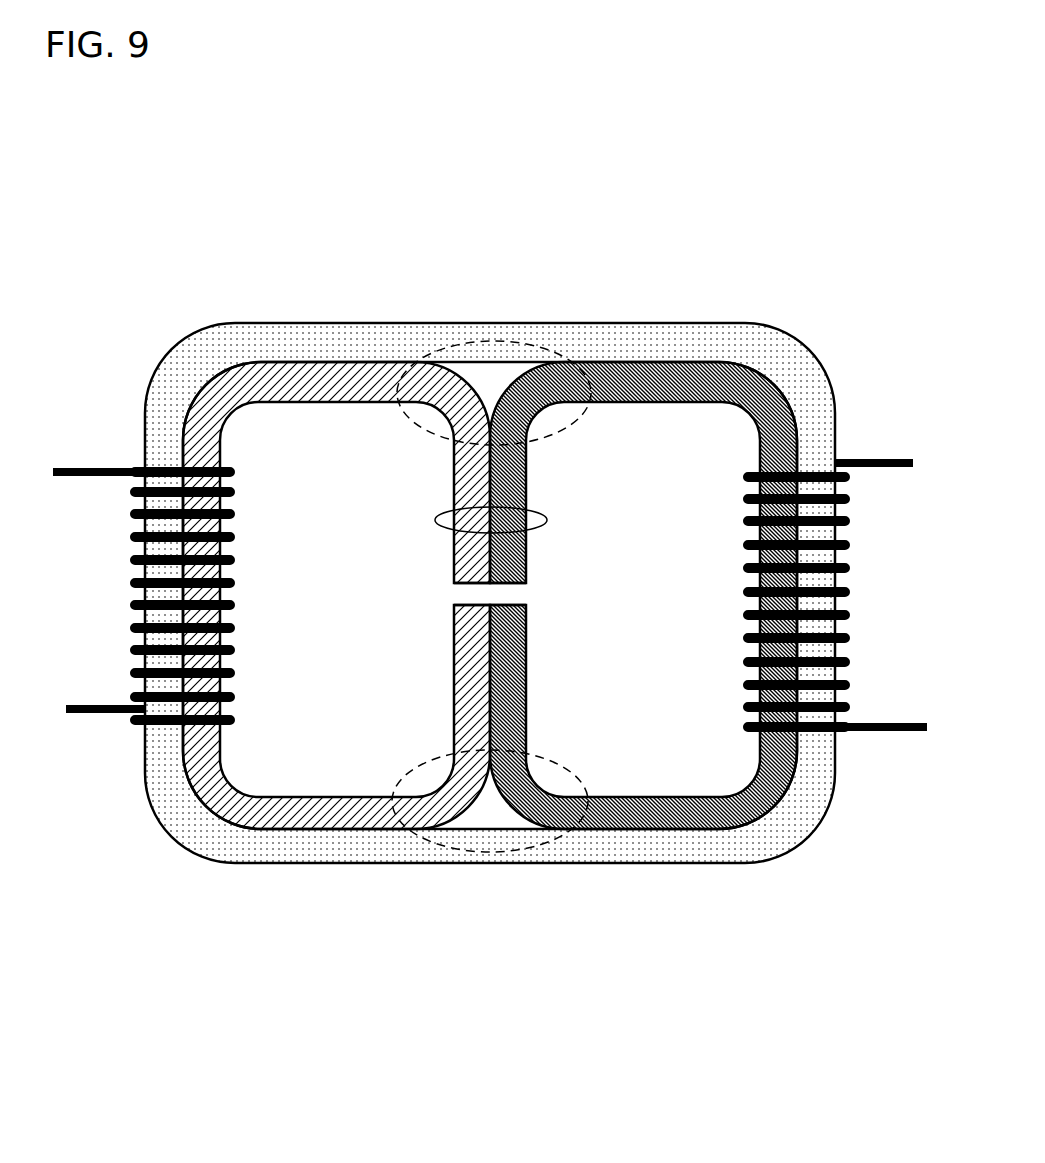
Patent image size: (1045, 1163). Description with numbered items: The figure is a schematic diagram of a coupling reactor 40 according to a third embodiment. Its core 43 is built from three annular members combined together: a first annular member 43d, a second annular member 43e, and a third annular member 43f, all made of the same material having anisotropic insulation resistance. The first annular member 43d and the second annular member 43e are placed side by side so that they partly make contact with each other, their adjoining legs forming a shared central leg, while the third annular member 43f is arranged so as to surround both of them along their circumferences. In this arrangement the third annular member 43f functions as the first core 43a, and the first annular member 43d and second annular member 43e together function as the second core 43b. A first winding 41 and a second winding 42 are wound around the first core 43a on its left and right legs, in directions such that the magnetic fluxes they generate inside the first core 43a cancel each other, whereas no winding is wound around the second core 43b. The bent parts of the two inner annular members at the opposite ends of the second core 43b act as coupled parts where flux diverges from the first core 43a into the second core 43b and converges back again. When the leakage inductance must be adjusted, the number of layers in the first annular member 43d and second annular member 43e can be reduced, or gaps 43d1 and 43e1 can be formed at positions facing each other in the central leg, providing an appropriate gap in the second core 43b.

The coupling reactor 40 is at (204, 208).
The first winding 41 is at (118, 495).
The second winding 42 is at (867, 482).
The core 43 is at (853, 920).
The first core 43a is at (492, 335).
The second core 43b is at (547, 520).
The first annular member 43d is at (338, 394).
The second annular member 43e is at (647, 393).
The gap 43d1 is at (455, 594).
The gap 43e1 is at (526, 594).
The third annular member 43f is at (490, 577).